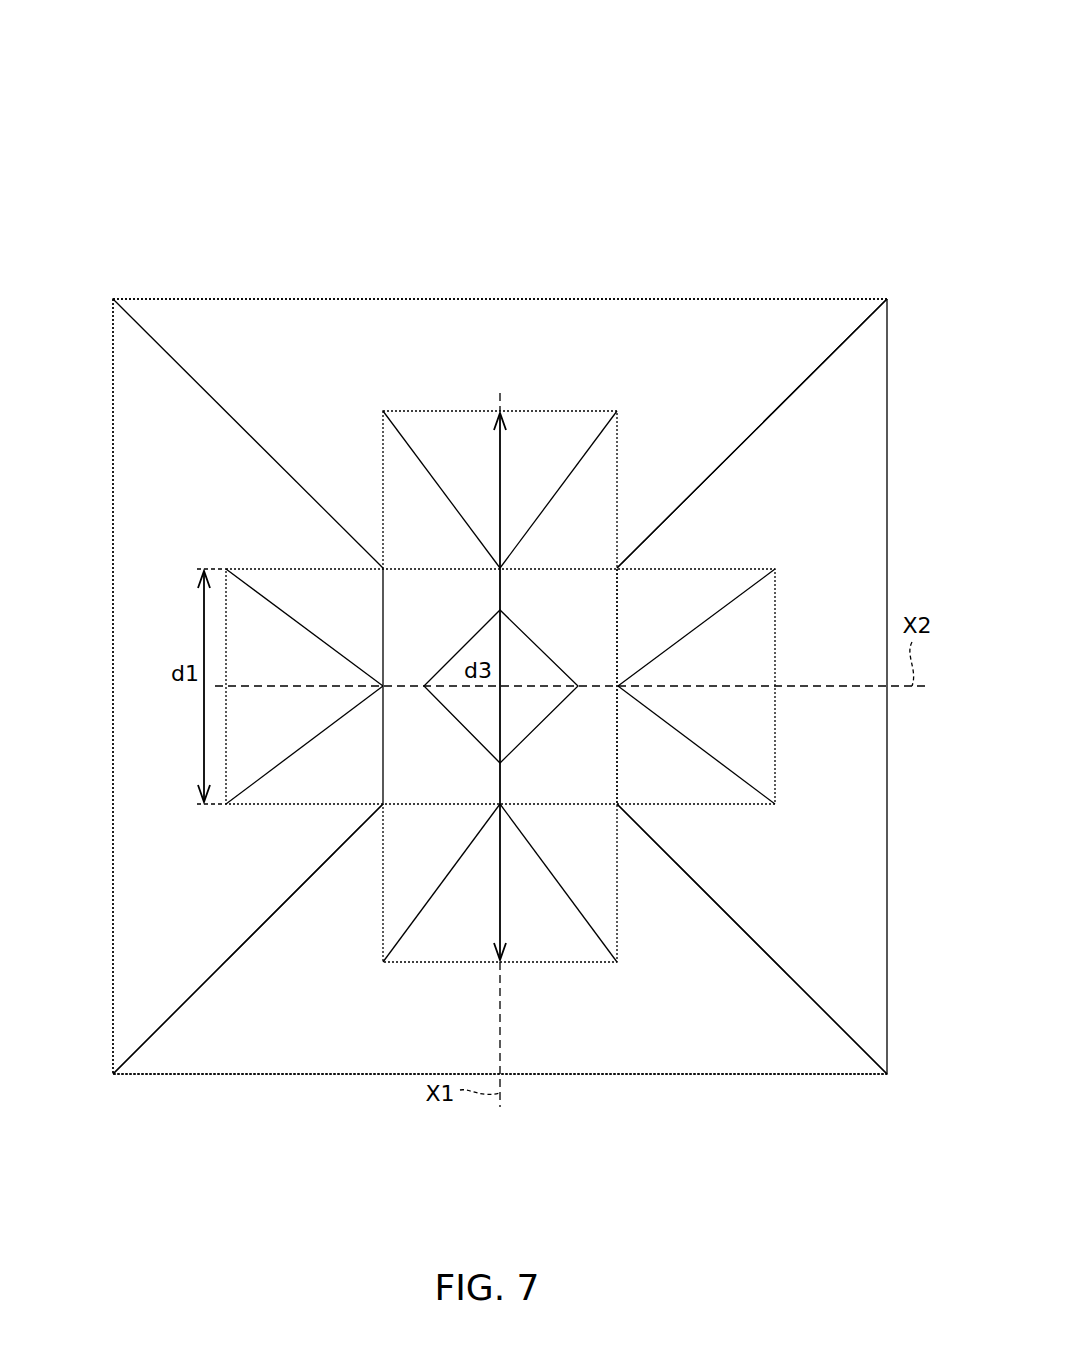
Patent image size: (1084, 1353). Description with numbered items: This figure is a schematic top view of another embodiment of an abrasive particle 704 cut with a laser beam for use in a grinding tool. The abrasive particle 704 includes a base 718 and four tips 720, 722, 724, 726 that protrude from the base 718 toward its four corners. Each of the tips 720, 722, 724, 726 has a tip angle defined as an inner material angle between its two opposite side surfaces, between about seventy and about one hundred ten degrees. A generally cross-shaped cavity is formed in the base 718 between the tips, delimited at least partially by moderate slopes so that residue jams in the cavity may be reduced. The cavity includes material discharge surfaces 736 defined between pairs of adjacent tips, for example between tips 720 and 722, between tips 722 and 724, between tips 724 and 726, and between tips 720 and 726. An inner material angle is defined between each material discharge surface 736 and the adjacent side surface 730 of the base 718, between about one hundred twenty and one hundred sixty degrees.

The abrasive particle 704 is at (879, 66).
The base 718 is at (249, 1056).
The tip 720 is at (277, 525).
The tip 722 is at (722, 527).
The tip 724 is at (722, 847).
The tip 726 is at (277, 848).
The side surface 730 is at (725, 333).
The material discharge surface 736 is at (527, 465).